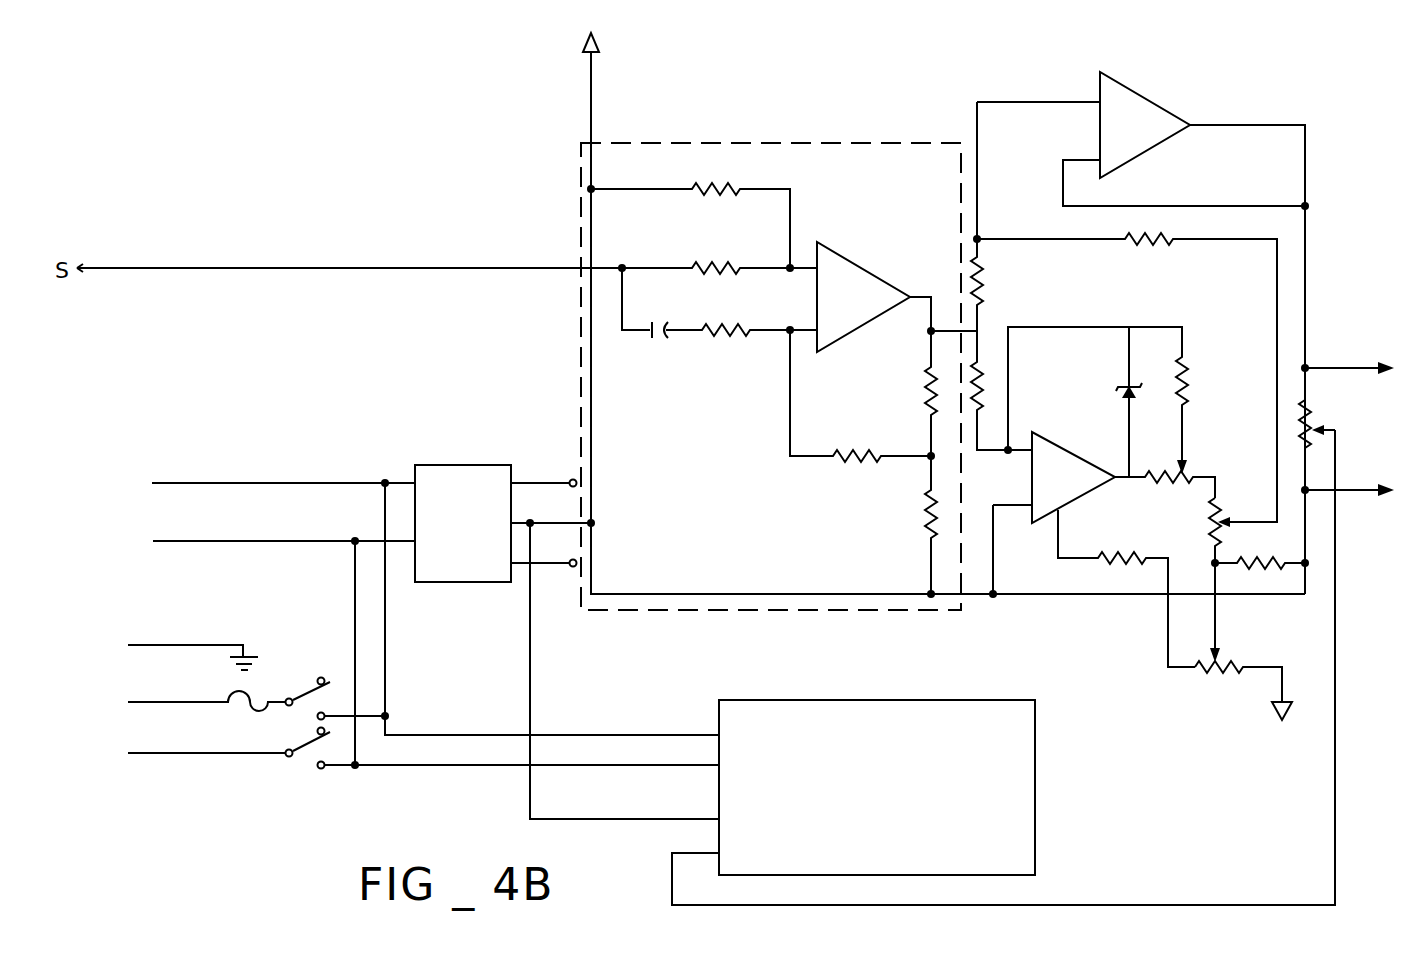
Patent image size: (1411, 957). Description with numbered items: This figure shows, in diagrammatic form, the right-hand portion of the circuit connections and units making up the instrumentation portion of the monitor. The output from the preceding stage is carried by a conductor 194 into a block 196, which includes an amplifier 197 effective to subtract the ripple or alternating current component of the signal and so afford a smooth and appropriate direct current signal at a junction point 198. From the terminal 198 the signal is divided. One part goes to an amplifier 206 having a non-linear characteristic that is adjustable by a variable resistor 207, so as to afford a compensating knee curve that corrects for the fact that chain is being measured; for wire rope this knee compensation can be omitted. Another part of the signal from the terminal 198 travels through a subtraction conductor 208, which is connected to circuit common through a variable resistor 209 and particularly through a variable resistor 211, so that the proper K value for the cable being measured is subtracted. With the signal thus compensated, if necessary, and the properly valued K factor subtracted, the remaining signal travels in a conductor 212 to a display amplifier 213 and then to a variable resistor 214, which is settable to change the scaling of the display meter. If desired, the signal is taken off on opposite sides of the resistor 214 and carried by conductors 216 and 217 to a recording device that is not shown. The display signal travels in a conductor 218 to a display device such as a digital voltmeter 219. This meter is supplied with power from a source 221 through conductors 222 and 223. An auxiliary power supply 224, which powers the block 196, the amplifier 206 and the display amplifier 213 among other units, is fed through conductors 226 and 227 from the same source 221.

The conductor 194 is at (410, 266).
The block 196 is at (776, 143).
The amplifier 197 is at (862, 271).
The junction point 198 is at (928, 333).
The amplifier 206 is at (1078, 452).
The variable resistor 207 is at (1186, 470).
The subtraction conductor 208 is at (1217, 242).
The variable resistor 209 is at (1205, 517).
The variable resistor 211 is at (1219, 657).
The conductor 212 is at (978, 131).
The display amplifier 213 is at (1158, 105).
The variable resistor 214 is at (1328, 398).
The conductor 216 is at (1348, 366).
The conductor 217 is at (1355, 493).
The conductor 218 is at (1335, 796).
The digital voltmeter 219 is at (1037, 740).
The source 221 is at (231, 723).
The conductor 222 is at (457, 724).
The conductor 223 is at (462, 768).
The auxiliary power supply 224 is at (447, 465).
The conductor 226 is at (355, 596).
The conductor 227 is at (388, 630).